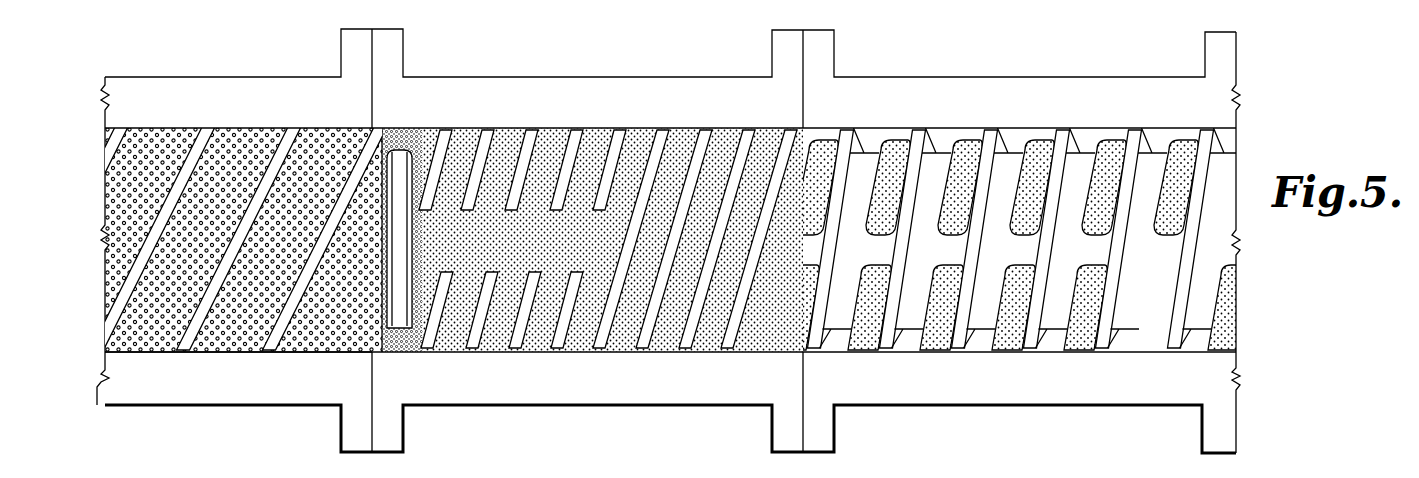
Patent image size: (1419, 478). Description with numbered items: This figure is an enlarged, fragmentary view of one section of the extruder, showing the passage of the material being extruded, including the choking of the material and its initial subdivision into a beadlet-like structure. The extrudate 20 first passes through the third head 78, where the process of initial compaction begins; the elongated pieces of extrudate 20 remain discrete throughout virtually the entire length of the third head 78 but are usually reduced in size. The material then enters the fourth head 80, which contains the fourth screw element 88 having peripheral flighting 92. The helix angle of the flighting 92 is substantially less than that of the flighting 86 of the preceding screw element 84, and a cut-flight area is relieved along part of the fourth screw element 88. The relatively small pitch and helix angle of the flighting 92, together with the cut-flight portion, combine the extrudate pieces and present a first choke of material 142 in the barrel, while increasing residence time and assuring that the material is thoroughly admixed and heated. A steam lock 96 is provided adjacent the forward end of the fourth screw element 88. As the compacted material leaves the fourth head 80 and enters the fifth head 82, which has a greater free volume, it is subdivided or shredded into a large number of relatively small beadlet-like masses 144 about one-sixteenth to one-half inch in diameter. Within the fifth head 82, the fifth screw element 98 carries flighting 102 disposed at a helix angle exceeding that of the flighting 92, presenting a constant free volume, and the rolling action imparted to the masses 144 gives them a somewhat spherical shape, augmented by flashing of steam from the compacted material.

The extrudate 20 is at (1182, 108).
The third head 78 is at (1000, 85).
The fourth head 80 is at (573, 83).
The fifth head 82 is at (188, 82).
The screw element 84 is at (977, 333).
The flighting 86 is at (1107, 340).
The fourth screw element 88 is at (550, 357).
The flighting 92 is at (705, 140).
The steam lock 96 is at (398, 236).
The fifth screw element 98 is at (183, 357).
The flighting 102 is at (287, 322).
The first choke of material 142 is at (670, 355).
The beadlet-like masses 144 is at (231, 362).